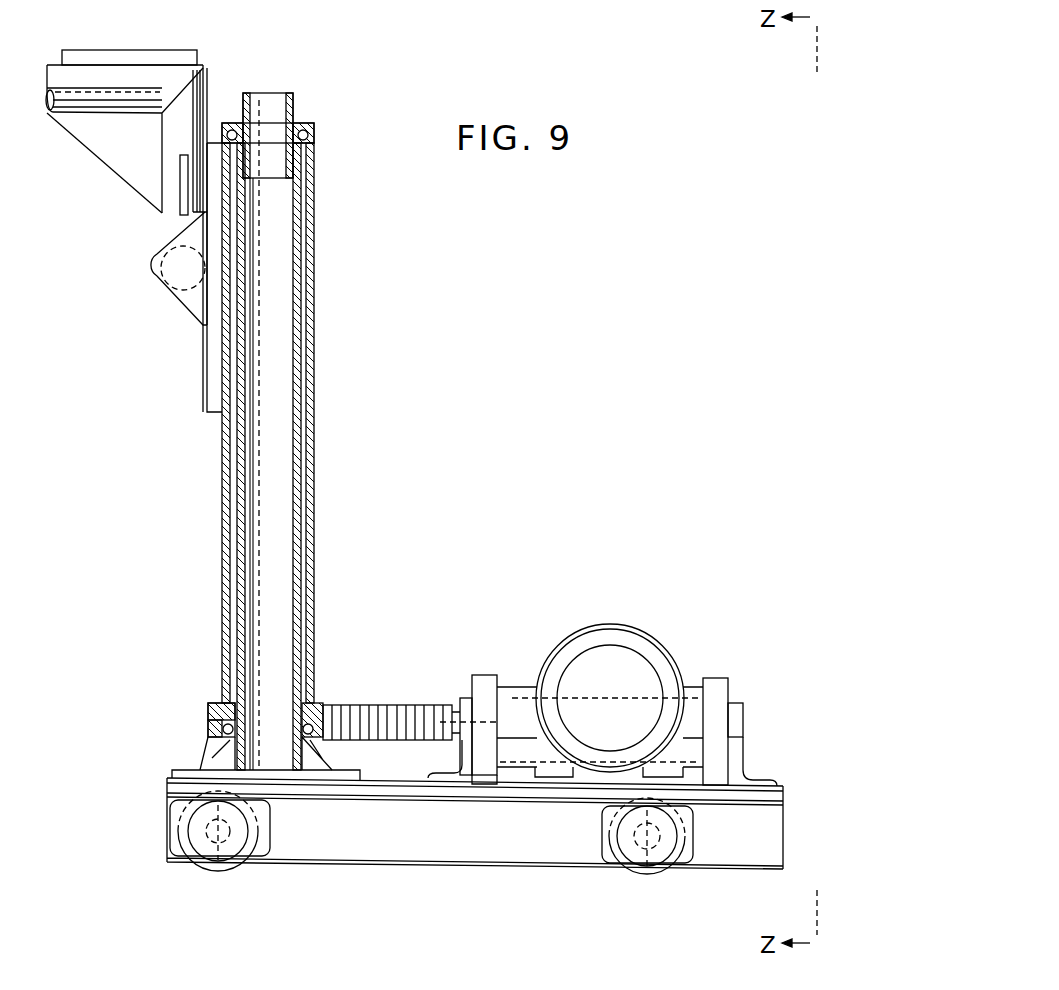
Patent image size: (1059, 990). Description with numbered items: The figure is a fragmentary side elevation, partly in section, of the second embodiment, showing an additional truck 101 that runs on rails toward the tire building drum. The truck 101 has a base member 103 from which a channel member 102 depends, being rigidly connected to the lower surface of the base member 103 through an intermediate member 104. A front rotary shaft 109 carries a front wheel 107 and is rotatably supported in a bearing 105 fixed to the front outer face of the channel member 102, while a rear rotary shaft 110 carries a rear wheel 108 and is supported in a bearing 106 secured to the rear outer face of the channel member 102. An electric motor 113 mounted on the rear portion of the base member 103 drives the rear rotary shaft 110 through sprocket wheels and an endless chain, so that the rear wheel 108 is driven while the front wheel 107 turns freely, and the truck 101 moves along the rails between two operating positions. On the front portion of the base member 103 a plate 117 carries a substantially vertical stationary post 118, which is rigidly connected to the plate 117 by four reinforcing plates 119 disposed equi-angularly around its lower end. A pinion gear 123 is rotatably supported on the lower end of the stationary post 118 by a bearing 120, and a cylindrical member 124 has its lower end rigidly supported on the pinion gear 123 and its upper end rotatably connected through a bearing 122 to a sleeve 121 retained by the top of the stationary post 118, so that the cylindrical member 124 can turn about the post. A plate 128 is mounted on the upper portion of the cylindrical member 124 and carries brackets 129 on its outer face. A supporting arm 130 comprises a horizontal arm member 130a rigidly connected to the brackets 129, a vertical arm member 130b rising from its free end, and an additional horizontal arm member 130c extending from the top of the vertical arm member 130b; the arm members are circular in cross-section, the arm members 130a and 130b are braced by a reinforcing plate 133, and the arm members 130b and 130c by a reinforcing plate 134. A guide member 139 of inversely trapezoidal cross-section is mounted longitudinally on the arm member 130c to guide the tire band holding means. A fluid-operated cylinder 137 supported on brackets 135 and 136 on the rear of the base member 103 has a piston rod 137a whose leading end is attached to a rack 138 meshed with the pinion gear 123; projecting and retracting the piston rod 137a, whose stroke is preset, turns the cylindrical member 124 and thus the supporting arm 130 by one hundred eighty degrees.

The truck 101 is at (458, 874).
The channel member 102 is at (756, 858).
The base member 103 is at (783, 786).
The intermediate member 104 is at (783, 797).
The bearing 105 is at (260, 840).
The bearing 106 is at (686, 816).
The front wheel 107 is at (190, 829).
The rear wheel 108 is at (620, 836).
The front rotary shaft 109 is at (222, 862).
The rear rotary shaft 110 is at (650, 866).
The electric motor 113 is at (628, 660).
The plate 117 is at (342, 778).
The stationary post 118 is at (310, 221).
The reinforcing plate 119 is at (215, 755).
The bearing 120 is at (315, 738).
The sleeve 121 is at (270, 100).
The bearing 122 is at (304, 122).
The pinion gear 123 is at (312, 708).
The cylindrical member 124 is at (316, 408).
The plate 128 is at (207, 393).
The bracket 129 is at (185, 318).
The supporting arm 130 is at (128, 242).
The horizontal arm member 130a is at (155, 262).
The vertical arm member 130b is at (206, 88).
The additional horizontal arm member 130c is at (178, 72).
The reinforcing plate 133 is at (182, 208).
The reinforcing plate 134 is at (120, 153).
The bracket 135 is at (447, 776).
The bracket 136 is at (755, 778).
The fluid-operated cylinder 137 is at (511, 686).
The piston rod 137a is at (456, 706).
The rack 138 is at (386, 712).
The guide member 139 is at (135, 50).